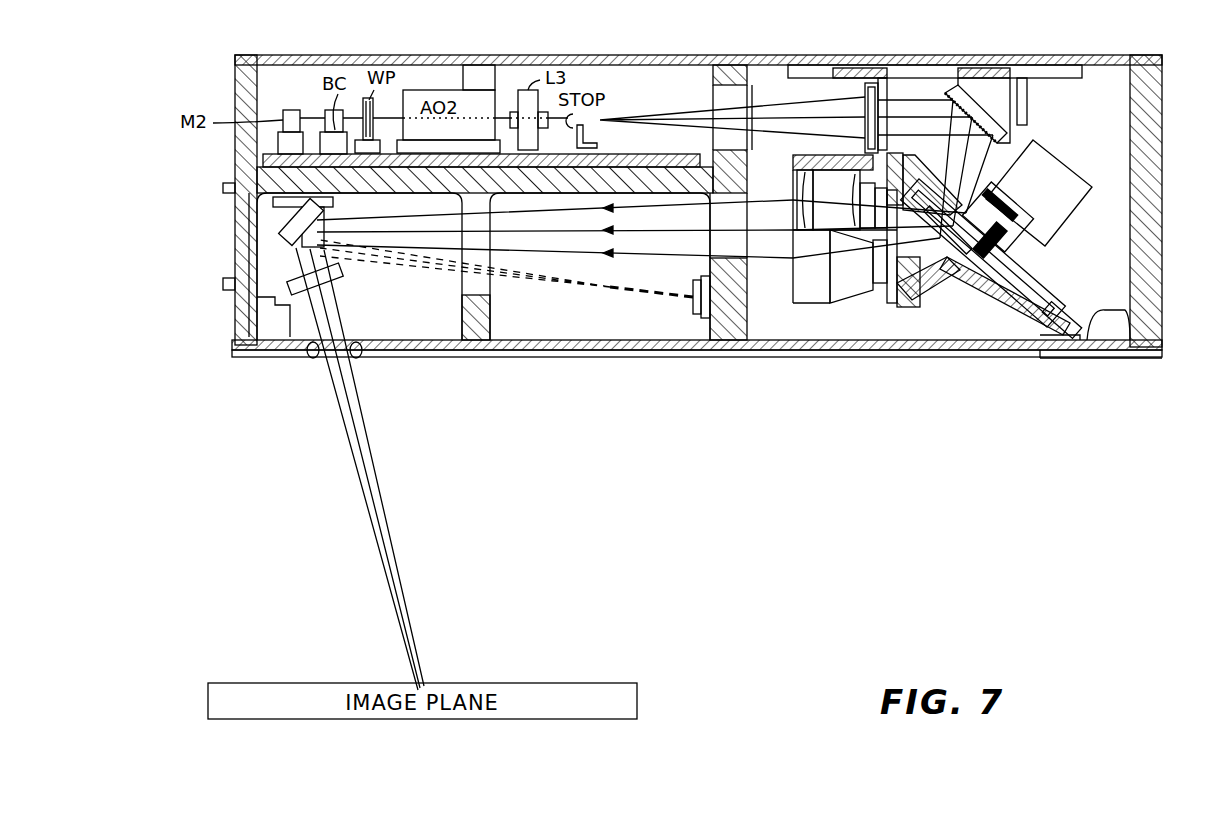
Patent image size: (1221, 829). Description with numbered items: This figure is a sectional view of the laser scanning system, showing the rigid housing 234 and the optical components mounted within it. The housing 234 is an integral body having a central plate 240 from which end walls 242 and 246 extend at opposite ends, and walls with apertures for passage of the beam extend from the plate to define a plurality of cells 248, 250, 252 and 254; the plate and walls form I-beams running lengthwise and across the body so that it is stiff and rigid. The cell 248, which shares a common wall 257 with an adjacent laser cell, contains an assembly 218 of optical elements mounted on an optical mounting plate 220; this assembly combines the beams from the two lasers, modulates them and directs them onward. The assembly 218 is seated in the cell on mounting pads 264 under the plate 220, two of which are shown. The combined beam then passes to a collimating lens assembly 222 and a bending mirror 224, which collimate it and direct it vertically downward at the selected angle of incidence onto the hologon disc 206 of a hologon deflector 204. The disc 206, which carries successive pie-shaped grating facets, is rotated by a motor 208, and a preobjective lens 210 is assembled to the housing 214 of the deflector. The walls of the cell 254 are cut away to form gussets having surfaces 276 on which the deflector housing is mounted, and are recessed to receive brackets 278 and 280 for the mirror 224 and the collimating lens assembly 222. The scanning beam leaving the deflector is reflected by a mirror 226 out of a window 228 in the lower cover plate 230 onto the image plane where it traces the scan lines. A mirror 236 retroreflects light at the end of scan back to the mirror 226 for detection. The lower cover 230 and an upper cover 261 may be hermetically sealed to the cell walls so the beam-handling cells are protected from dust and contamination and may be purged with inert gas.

The hologon deflector 204 is at (922, 288).
The hologon disc 206 is at (1052, 278).
The motor 208 is at (1075, 204).
The preobjective lens 210 is at (812, 298).
The housing of the deflector 214 is at (1058, 345).
The assembly of optical elements 218 is at (624, 88).
The optical mounting plate 220 is at (263, 162).
The collimating lens assembly 222 is at (866, 100).
The bending mirror 224 is at (1000, 128).
The mirror 226 is at (282, 230).
The window 228 is at (350, 328).
The lower cover plate 230 is at (632, 352).
The housing 234 is at (226, 88).
The end-of-scan mirror 236 is at (694, 296).
The central plate 240 is at (637, 193).
The end wall 242 is at (233, 312).
The end wall 246 is at (1163, 206).
The cell 248 is at (485, 110).
The cell 250 is at (359, 266).
The cell 252 is at (600, 266).
The cell 254 is at (938, 202).
The common wall 257 is at (495, 65).
The cover 261 is at (340, 55).
The mounting pads 264 is at (333, 168).
The gusset surfaces 276 is at (1103, 340).
The bracket 278 is at (875, 65).
The bracket 280 is at (995, 65).